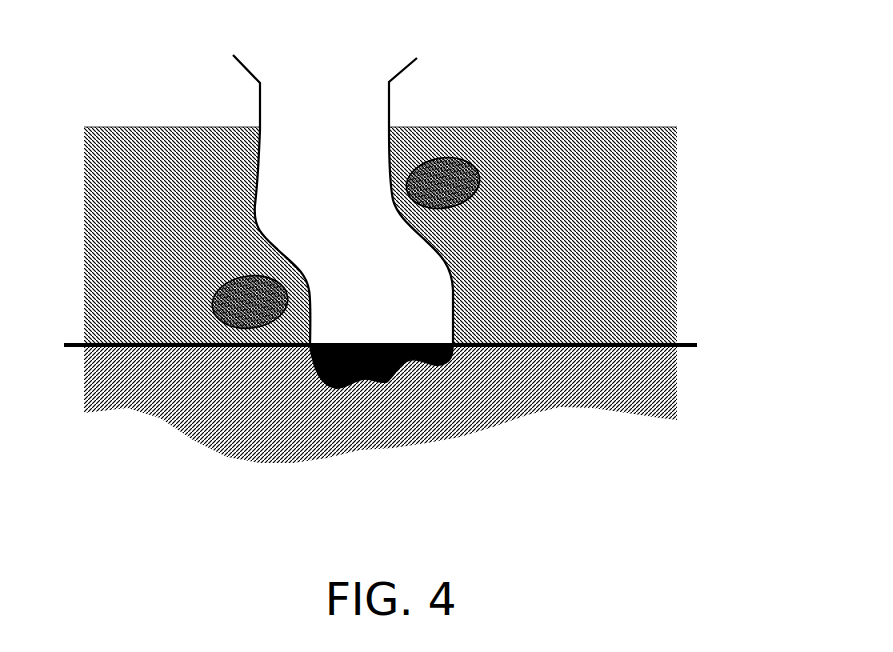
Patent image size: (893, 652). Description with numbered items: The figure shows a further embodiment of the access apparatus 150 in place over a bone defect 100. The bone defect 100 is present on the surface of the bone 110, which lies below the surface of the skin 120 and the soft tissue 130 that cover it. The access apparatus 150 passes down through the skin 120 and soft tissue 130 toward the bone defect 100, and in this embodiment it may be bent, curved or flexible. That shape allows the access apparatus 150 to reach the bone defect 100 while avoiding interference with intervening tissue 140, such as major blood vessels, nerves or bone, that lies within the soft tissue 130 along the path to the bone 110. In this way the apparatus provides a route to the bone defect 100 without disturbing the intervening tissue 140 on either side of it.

The bone defect 100 is at (390, 392).
The bone 110 is at (570, 338).
The skin 120 is at (138, 120).
The soft tissue 130 is at (690, 238).
The intervening tissue 140 is at (490, 172).
The access apparatus 150 is at (400, 101).